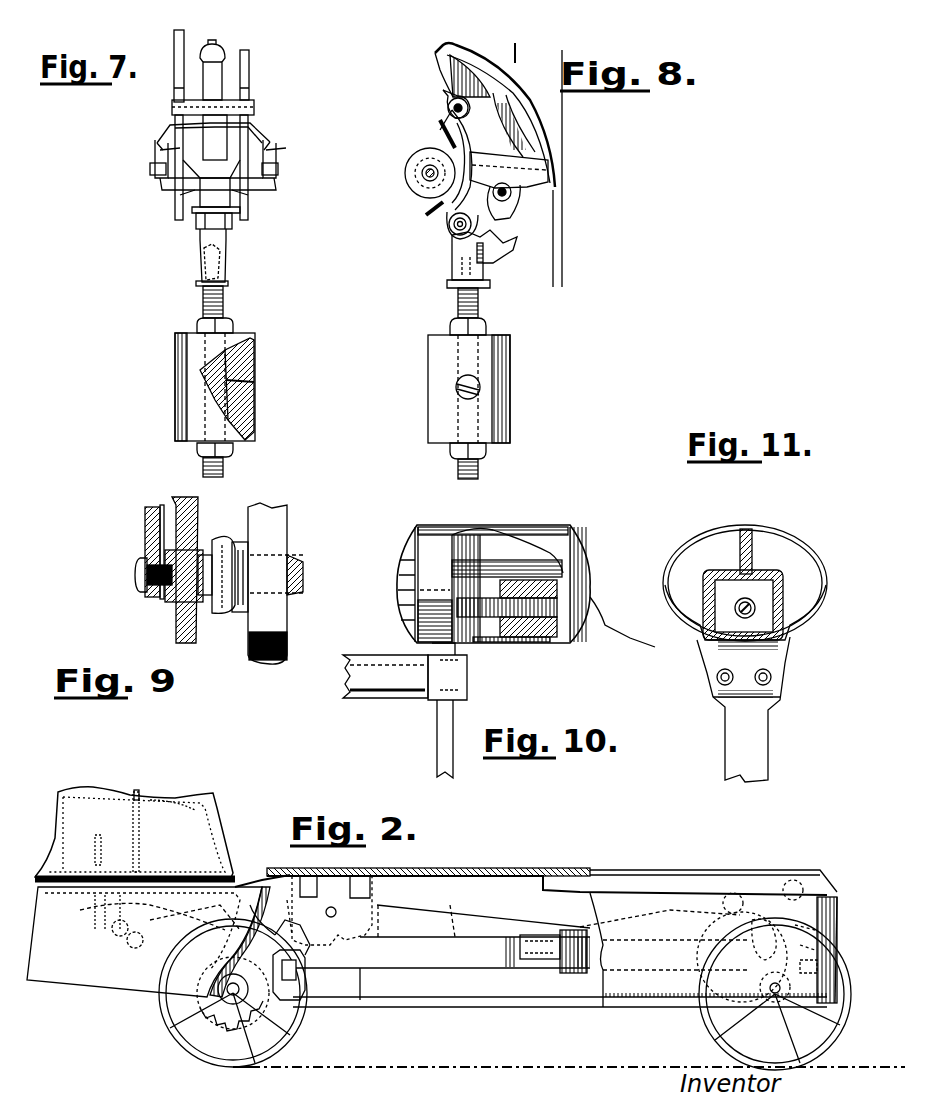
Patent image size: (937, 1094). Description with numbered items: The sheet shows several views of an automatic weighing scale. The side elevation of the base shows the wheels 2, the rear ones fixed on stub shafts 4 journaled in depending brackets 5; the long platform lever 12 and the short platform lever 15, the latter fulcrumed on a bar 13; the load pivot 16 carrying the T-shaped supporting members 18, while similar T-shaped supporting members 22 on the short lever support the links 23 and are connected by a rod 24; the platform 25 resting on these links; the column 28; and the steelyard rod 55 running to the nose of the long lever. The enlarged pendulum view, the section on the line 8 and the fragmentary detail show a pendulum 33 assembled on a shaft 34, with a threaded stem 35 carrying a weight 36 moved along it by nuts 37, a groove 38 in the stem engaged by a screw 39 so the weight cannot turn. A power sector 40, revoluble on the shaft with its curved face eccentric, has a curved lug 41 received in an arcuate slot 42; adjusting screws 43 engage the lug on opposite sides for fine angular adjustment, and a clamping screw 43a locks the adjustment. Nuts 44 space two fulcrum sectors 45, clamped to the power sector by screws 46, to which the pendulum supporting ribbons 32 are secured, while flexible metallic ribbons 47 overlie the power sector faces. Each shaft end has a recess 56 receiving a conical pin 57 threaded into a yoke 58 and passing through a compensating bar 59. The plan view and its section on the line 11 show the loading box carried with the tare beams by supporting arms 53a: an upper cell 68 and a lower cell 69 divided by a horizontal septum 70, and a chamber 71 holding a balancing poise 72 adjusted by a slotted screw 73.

In FIG. 2, the wheel 2 is at (298, 1024).
In FIG. 2, the stub shaft 4 is at (205, 1005).
In FIG. 2, the depending bracket 5 is at (218, 990).
In FIG. 7, the section line 8— 8 is at (240, 30).
In FIG. 10, the section line 11— 11 is at (568, 683).
In FIG. 2, the long platform lever 12 is at (475, 955).
In FIG. 2, the bar 13 is at (270, 1042).
In FIG. 2, the short platform lever 15 is at (538, 981).
In FIG. 2, the load pivot 16 is at (720, 1000).
In FIG. 2, the T-shaped supporting member 18 is at (760, 900).
In FIG. 2, the T-shaped supporting member 22 is at (335, 988).
In FIG. 2, the link 23 is at (405, 875).
In FIG. 2, the rod 24 is at (332, 907).
In FIG. 2, the platform 25 is at (615, 870).
In FIG. 2, the column 28 is at (205, 822).
In FIG. 8, the pendulum supporting ribbon 32 is at (529, 43).
In FIG. 7, the pendulum 33 is at (192, 265).
In FIG. 10, the pendulum 33 is at (395, 700).
In FIG. 7, the shaft 34 is at (430, 173).
In FIG. 9, the shaft 34 is at (295, 558).
In FIG. 7, the stem 35 is at (203, 300).
In FIG. 8, the stem 35 is at (468, 303).
In FIG. 8, the weight 36 is at (440, 352).
In FIG. 7, the nut 37 is at (233, 326).
In FIG. 8, the nut 37 is at (450, 326).
In FIG. 7, the groove 38 is at (187, 352).
In FIG. 7, the screw 39 is at (254, 398).
In FIG. 8, the screw 39 is at (458, 393).
In FIG. 7, the power sector 40 is at (218, 66).
In FIG. 8, the power sector 40 is at (514, 105).
In FIG. 8, the curved lug 41 is at (437, 190).
In FIG. 8, the arcuate slot 42 is at (455, 145).
In FIG. 8, the adjusting screw 43 is at (440, 122).
In FIG. 8, the clamping screw 43a is at (448, 240).
In FIG. 7, the nut 44 is at (248, 157).
In FIG. 9, the nut 44 is at (222, 613).
In FIG. 7, the fulcrum sector 45 is at (174, 96).
In FIG. 8, the fulcrum sector 45 is at (480, 150).
In FIG. 8, the screw 46 is at (452, 100).
In FIG. 8, the flexible metallic ribbon 47 is at (562, 248).
In FIG. 10, the supporting arm 53a is at (453, 772).
In FIG. 2, the steelyard rod 55 is at (140, 793).
In FIG. 9, the recess 56 is at (165, 595).
In FIG. 9, the conical pin 57 is at (147, 590).
In FIG. 7, the yoke 58 is at (276, 160).
In FIG. 9, the yoke 58 is at (145, 545).
In FIG. 7, the compensating bar 59 is at (155, 150).
In FIG. 9, the compensating bar 59 is at (160, 505).
In FIG. 10, the upper cell 68 is at (440, 526).
In FIG. 11, the upper cell 68 is at (692, 555).
In FIG. 11, the lower cell 69 is at (775, 552).
In FIG. 11, the horizontal septum 70 is at (750, 528).
In FIG. 11, the chamber 71 is at (705, 608).
In FIG. 11, the balancing poise 72 is at (720, 625).
In FIG. 10, the screw 73 is at (543, 612).